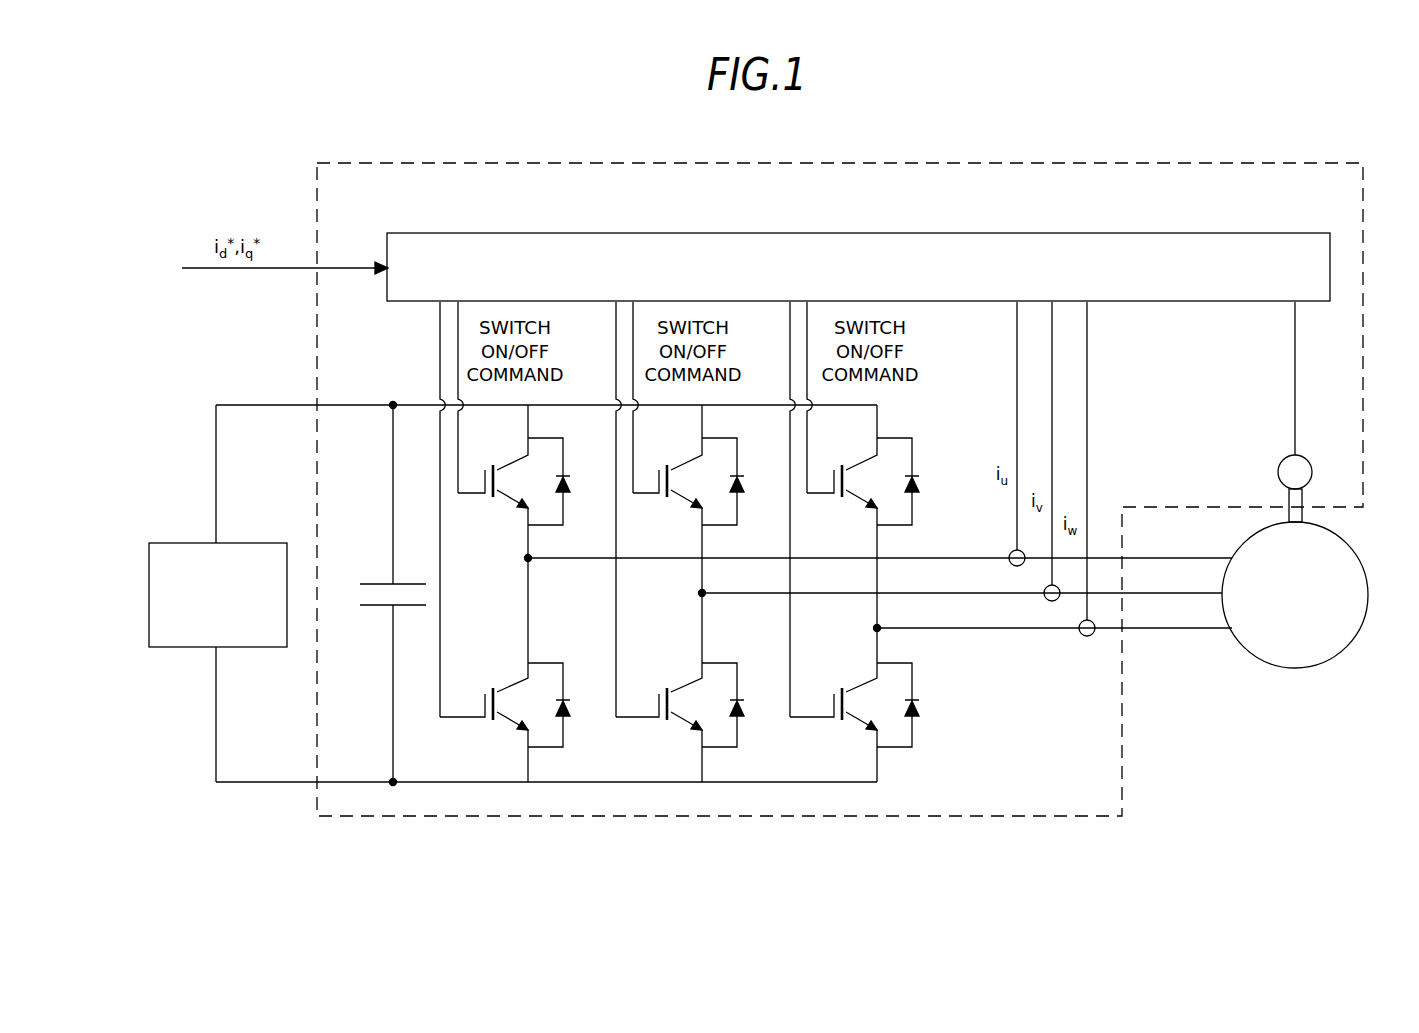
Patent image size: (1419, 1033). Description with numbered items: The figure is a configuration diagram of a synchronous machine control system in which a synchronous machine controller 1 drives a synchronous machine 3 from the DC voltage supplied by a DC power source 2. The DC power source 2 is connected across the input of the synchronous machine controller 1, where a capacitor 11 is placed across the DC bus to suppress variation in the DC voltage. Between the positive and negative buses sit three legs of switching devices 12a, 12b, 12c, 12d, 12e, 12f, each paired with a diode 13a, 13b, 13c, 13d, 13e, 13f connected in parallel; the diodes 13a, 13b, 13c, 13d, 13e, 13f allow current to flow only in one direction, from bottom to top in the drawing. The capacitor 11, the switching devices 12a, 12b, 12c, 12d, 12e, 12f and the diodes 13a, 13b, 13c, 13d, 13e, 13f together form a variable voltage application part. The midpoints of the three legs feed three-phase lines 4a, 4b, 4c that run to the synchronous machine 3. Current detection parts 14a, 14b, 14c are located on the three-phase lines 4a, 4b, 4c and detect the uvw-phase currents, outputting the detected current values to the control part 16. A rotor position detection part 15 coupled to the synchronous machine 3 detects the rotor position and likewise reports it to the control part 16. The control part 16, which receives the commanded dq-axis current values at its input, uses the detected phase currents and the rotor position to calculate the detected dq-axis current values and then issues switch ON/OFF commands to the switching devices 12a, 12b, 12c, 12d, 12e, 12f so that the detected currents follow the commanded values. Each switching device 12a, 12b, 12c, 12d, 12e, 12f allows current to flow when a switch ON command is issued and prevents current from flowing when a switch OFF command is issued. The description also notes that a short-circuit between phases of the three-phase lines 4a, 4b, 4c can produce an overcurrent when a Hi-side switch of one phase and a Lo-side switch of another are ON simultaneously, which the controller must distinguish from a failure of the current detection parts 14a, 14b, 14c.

The synchronous machine controller 1 is at (350, 162).
The DC power source 2 is at (232, 542).
The synchronous machine 3 is at (1292, 670).
The three-phase line 4a is at (1222, 562).
The three-phase line 4b is at (1222, 597).
The three-phase line 4c is at (1222, 632).
The capacitor 11 is at (380, 606).
The switching device 12a is at (513, 463).
The switching device 12b is at (513, 686).
The switching device 12c is at (687, 463).
The switching device 12d is at (687, 686).
The switching device 12e is at (862, 463).
The switching device 12f is at (865, 686).
The diode 13a is at (571, 499).
The diode 13b is at (571, 722).
The diode 13c is at (745, 499).
The diode 13d is at (745, 722).
The diode 13e is at (920, 499).
The diode 13f is at (920, 722).
The current detection part 14a is at (1009, 569).
The current detection part 14b is at (1044, 604).
The current detection part 14c is at (1079, 638).
The rotor position detection part 15 is at (1278, 474).
The control part 16 is at (422, 233).